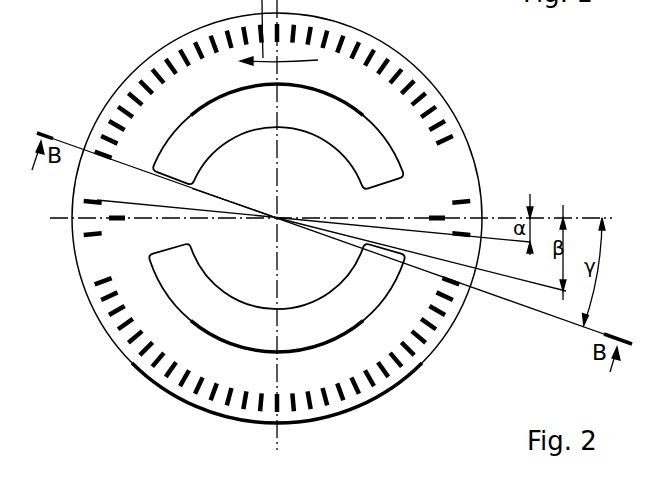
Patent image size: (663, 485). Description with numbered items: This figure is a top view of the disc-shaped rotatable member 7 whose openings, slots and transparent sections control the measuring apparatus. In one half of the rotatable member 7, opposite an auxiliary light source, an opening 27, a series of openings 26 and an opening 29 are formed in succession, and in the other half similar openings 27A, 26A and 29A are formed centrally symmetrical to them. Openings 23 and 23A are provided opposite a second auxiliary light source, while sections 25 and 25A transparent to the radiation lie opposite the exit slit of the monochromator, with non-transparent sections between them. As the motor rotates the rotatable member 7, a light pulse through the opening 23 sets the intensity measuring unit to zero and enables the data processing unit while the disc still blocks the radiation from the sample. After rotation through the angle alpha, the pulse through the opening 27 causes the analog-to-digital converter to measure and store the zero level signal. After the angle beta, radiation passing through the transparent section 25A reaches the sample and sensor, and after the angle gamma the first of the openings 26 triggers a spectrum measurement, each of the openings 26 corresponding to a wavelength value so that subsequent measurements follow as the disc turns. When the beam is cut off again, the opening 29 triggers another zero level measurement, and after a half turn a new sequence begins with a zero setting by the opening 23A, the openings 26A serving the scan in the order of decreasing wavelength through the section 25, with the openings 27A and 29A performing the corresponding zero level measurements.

The disc-shaped rotatable member 7 is at (426, 163).
The opening 23 is at (106, 218).
The opening 23A is at (436, 216).
The section transparent to the radiation 25 is at (357, 137).
The section transparent to the radiation 25A is at (373, 287).
The openings 26 is at (181, 59).
The openings 26A is at (186, 380).
The opening 27 is at (90, 198).
The opening 27A is at (463, 233).
The opening 29 is at (462, 194).
The opening 29A is at (93, 238).